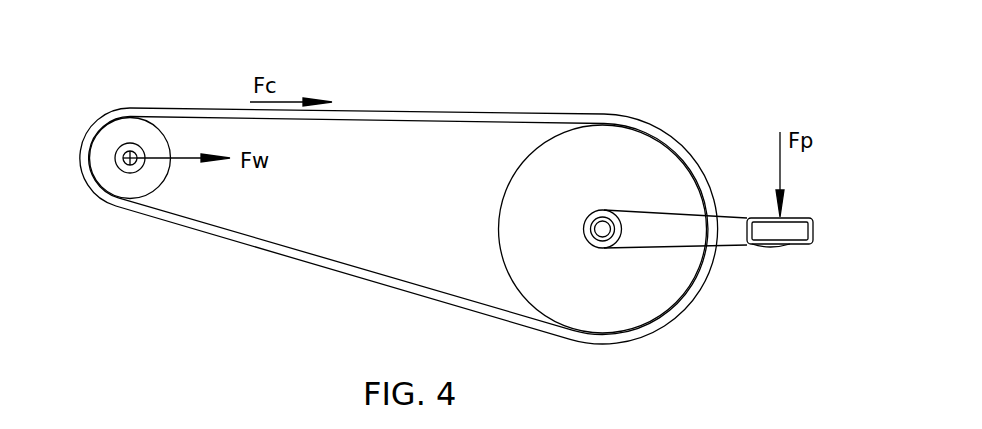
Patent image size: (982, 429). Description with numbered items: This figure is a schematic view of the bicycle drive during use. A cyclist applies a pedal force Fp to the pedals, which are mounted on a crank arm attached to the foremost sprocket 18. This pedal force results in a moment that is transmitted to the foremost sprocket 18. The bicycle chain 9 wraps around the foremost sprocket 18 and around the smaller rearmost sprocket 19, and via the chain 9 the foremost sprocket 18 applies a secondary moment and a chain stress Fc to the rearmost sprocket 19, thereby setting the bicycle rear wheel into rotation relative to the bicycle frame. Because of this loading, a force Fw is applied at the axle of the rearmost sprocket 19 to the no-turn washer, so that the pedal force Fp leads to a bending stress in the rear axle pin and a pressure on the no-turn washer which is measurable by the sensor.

The bicycle chain 9 is at (453, 118).
The foremost sprocket 18 is at (655, 165).
The rearmost sprocket 19 is at (110, 137).